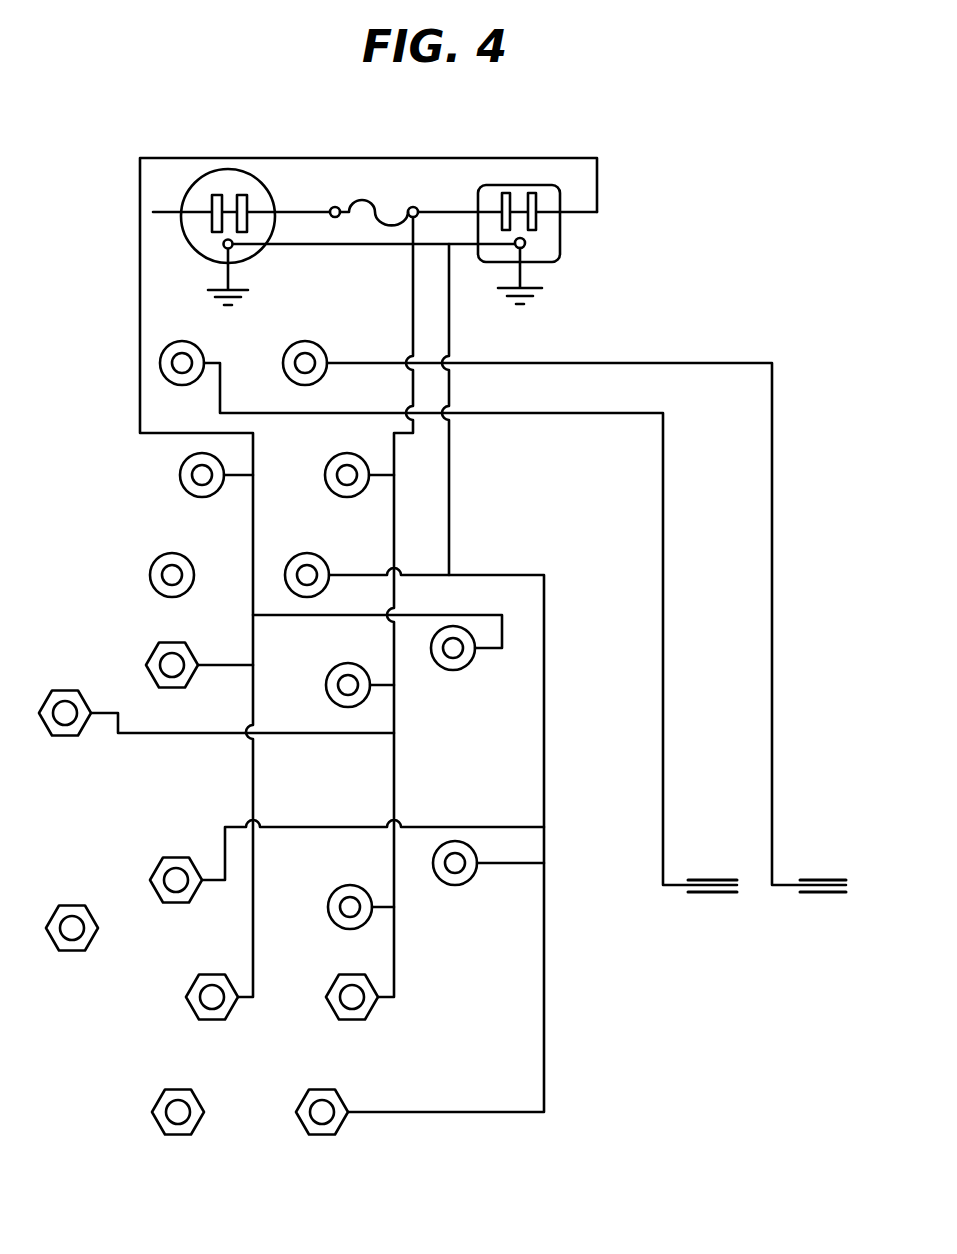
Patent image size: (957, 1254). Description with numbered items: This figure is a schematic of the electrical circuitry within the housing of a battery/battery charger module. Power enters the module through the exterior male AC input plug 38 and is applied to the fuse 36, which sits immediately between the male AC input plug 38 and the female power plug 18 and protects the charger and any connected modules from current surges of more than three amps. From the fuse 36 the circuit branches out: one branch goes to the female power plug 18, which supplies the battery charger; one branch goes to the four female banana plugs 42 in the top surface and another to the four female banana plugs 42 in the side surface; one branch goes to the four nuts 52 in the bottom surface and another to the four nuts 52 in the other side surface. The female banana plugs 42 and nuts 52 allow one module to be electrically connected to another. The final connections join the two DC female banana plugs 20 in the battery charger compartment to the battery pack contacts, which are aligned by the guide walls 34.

The female power plug 18 is at (192, 188).
The fuse 36 is at (382, 199).
The male AC input plug 38 is at (553, 252).
The female banana plugs 20 is at (198, 346).
The female banana plugs 42 is at (183, 473).
The nuts 52 is at (190, 684).
The guide walls 34 is at (722, 893).